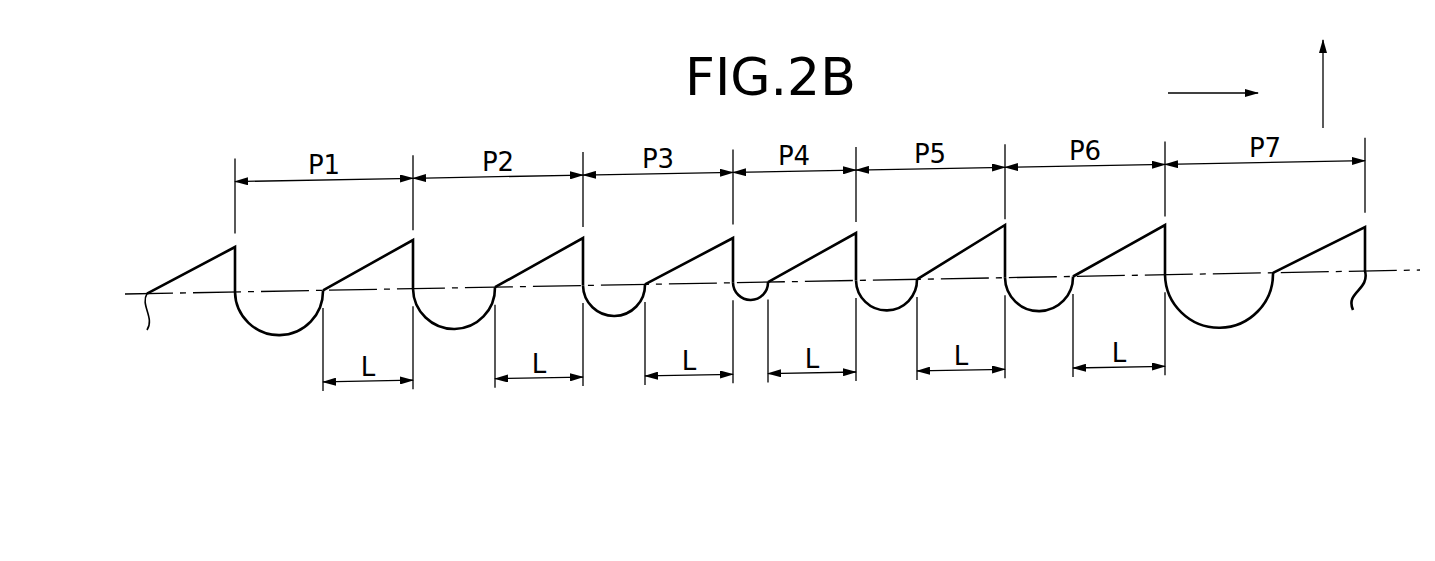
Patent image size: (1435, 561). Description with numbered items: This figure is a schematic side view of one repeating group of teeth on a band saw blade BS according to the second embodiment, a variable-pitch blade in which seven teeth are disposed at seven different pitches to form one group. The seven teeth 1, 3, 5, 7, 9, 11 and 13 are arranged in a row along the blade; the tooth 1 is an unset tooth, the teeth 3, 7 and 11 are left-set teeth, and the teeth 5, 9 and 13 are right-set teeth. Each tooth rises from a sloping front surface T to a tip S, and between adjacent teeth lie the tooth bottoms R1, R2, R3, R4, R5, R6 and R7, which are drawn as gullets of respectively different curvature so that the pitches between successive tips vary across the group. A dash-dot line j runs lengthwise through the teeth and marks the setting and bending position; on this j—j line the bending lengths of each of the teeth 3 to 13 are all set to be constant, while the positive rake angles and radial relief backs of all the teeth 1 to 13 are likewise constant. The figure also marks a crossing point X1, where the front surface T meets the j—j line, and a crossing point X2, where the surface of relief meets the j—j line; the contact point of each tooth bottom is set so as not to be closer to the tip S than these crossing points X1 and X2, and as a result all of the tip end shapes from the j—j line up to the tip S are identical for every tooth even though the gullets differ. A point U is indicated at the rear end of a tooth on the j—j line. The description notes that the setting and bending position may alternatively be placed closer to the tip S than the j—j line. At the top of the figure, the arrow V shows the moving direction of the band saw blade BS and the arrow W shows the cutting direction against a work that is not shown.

The tooth 1 is at (207, 267).
The tooth 3 is at (1138, 252).
The tooth 5 is at (977, 255).
The tooth 7 is at (835, 255).
The tooth 9 is at (702, 258).
The tooth 11 is at (557, 260).
The tooth 13 is at (380, 265).
The band saw blade BS is at (622, 138).
The tip S is at (413, 240).
The front surface T is at (243, 262).
The gullet end point U is at (324, 283).
The crossing point X1 is at (232, 297).
The crossing point X2 is at (325, 298).
The tooth bottom R1 is at (283, 277).
The tooth bottom R2 is at (462, 273).
The tooth bottom R3 is at (628, 262).
The tooth bottom R4 is at (773, 253).
The tooth bottom R5 is at (902, 253).
The tooth bottom R6 is at (1013, 297).
The tooth bottom R7 is at (1173, 298).
The setting and bending position line j is at (761, 288).
The moving direction arrow V is at (1207, 93).
The cutting direction arrow W is at (1323, 95).